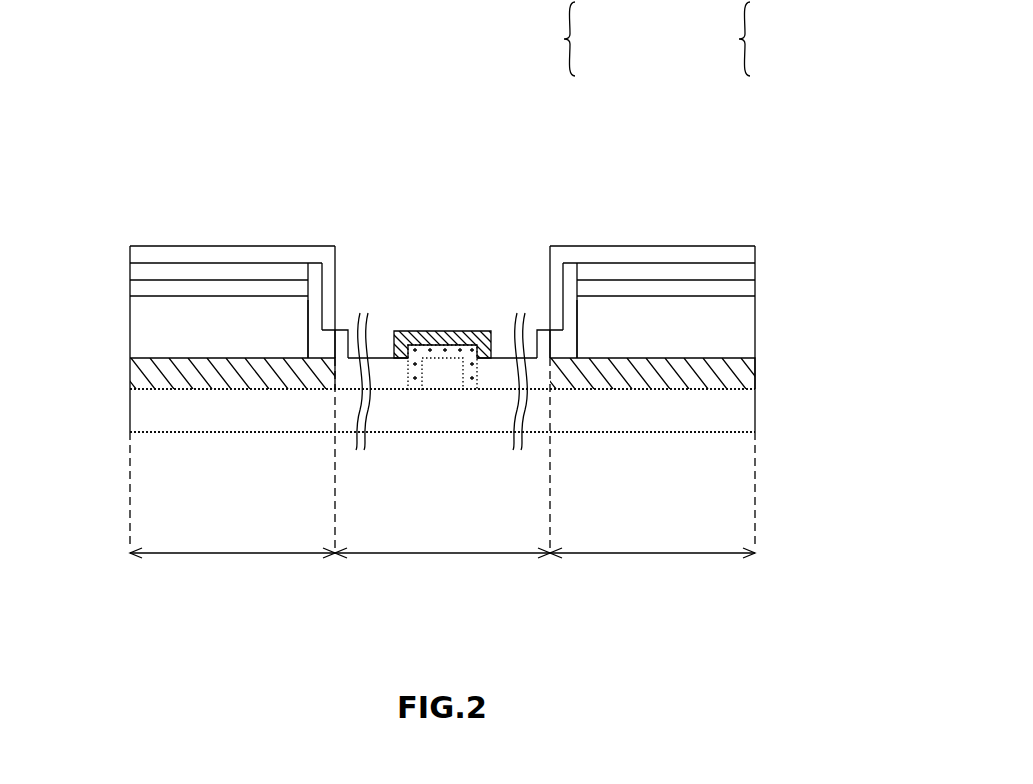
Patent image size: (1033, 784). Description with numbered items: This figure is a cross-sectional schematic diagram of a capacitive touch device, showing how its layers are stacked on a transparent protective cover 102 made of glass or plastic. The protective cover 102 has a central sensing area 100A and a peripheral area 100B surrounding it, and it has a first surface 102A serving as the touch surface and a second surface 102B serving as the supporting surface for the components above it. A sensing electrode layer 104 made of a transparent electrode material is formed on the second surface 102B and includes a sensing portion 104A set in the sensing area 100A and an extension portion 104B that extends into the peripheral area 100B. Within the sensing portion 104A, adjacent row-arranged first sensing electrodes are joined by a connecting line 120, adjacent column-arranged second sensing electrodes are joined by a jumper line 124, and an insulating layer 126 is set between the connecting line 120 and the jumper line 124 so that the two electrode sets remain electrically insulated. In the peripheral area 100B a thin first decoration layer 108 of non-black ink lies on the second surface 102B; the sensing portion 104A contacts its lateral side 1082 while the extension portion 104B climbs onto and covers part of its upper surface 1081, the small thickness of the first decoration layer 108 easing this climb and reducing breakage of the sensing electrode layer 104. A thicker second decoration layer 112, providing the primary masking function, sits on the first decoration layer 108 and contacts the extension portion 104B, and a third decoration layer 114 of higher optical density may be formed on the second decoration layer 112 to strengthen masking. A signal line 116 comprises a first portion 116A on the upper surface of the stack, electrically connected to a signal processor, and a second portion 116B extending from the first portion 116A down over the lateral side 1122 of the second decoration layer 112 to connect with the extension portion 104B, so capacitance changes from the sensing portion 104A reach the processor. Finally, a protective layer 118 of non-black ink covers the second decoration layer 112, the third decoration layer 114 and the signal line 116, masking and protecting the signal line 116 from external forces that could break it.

The sensing area 100A is at (442, 476).
The peripheral area 100B is at (442, 476).
The protective cover 102 is at (388, 418).
The first surface 102A is at (735, 436).
The second surface 102B is at (733, 393).
The sensing electrode layer 104 is at (526, 188).
The sensing portion 104A is at (493, 375).
The extension portion 104B is at (318, 345).
The first decoration layer 108 is at (137, 376).
The upper surface 1081 is at (211, 362).
The lateral side 1082 is at (336, 371).
The second decoration layer 112 is at (140, 310).
The lateral side 1122 is at (307, 314).
The third decoration layer 114 is at (140, 290).
The signal line 116 is at (442, 141).
The first portion 116A is at (199, 268).
The second portion 116B is at (316, 278).
The protective layer 118 is at (140, 255).
The connecting line 120 is at (443, 380).
The jumper line 124 is at (472, 340).
The insulating layer 126 is at (423, 345).